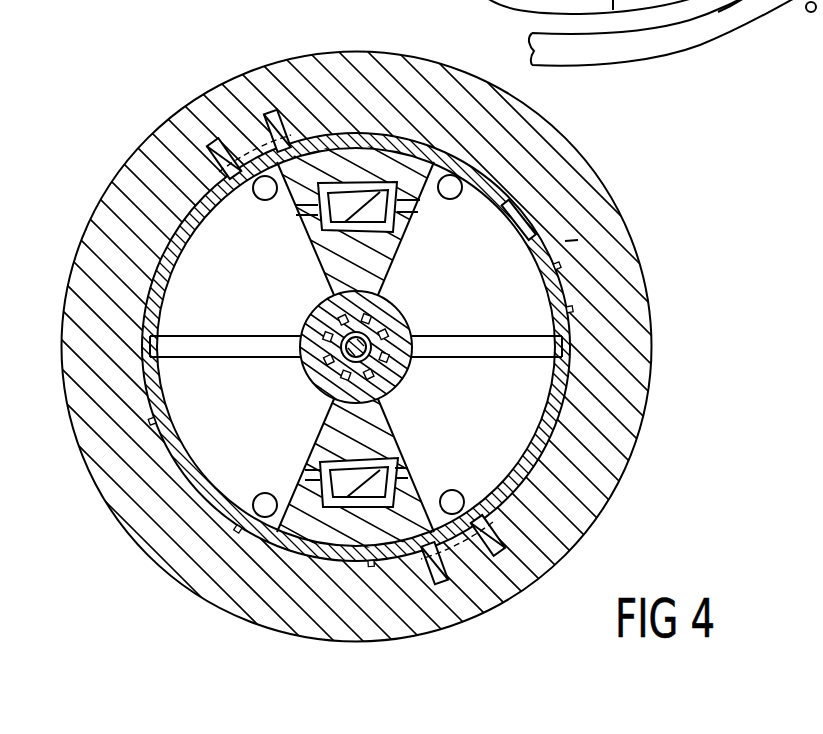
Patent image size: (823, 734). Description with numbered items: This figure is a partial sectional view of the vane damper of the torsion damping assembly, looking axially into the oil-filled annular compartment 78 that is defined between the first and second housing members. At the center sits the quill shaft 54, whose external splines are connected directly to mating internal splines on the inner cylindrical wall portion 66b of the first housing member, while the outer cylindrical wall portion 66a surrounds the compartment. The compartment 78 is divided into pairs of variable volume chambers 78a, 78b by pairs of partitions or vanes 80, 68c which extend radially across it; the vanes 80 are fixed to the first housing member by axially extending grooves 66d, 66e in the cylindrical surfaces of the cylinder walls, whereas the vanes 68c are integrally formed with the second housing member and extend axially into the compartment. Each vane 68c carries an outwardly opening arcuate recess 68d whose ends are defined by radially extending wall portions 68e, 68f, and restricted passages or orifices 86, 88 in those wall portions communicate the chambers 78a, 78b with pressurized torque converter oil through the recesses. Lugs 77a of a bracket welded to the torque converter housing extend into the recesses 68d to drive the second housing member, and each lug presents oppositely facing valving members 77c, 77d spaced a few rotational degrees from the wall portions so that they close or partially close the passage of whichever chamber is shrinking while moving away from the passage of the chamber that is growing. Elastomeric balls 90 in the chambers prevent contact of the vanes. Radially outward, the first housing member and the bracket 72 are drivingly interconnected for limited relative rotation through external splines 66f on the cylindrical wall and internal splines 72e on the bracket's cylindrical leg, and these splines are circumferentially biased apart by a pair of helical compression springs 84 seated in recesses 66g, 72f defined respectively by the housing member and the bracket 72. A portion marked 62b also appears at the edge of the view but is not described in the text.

The bracket 72 is at (222, 92).
The recesses 72f is at (232, 128).
The internal splines 72e is at (566, 316).
The helical compression springs 84 is at (266, 128).
The recesses 66g is at (255, 152).
The cylindrical wall portion 66a is at (548, 218).
The external splines 66f is at (578, 240).
The axially extending groove 66e is at (300, 337).
The axially extending groove 66d is at (160, 350).
The cylindrical wall portion 66b is at (411, 337).
The annular compartment 78 is at (533, 418).
The variable volume chamber 78a is at (297, 290).
The variable volume chamber 78b is at (242, 425).
The vanes 68c is at (330, 404).
The arcuate recesses 68d is at (347, 186).
The radially extending wall portion 68e is at (300, 203).
The radially extending wall portion 68f is at (397, 205).
The restricted passage 86 is at (300, 213).
The restricted passage 88 is at (410, 213).
The lugs 77a is at (303, 477).
The valving member 77c is at (410, 448).
The valving member 77d is at (302, 458).
The elastomeric balls 90 is at (462, 180).
The vanes 80 is at (200, 337).
The quill shaft 54 is at (393, 358).
The arm segment 62b is at (486, 0).